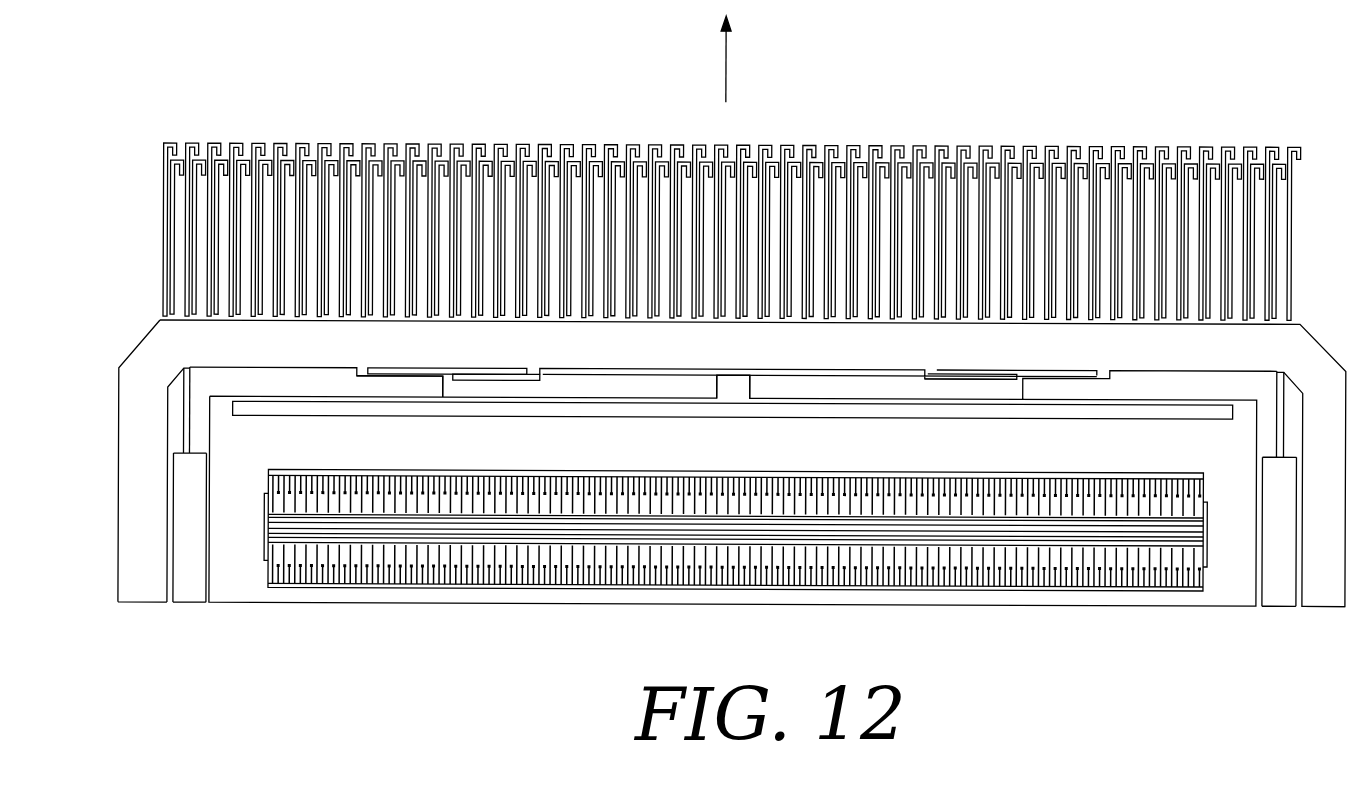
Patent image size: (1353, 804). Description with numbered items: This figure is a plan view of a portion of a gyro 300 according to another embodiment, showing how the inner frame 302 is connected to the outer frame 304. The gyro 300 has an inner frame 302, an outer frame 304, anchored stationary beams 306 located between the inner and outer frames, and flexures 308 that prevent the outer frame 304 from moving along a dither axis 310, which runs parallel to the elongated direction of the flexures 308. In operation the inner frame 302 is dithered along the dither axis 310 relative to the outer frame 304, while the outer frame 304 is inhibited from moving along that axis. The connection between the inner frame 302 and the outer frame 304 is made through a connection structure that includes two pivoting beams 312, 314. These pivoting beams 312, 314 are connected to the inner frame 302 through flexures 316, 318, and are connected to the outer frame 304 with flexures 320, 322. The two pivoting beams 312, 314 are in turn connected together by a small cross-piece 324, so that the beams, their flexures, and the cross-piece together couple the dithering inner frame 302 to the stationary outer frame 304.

The gyro 300 is at (903, 80).
The inner frame 302 is at (240, 590).
The outer frame 304 is at (150, 583).
The anchored stationary beams 306 is at (195, 585).
The flexures 308 is at (190, 400).
The dither axis 310 is at (727, 58).
The pivoting beam 312 is at (477, 383).
The pivoting beam 314 is at (1013, 388).
The flexure 316 is at (293, 397).
The flexure 318 is at (1175, 398).
The flexure 320 is at (390, 378).
The flexure 322 is at (1075, 380).
The cross-piece 324 is at (734, 377).